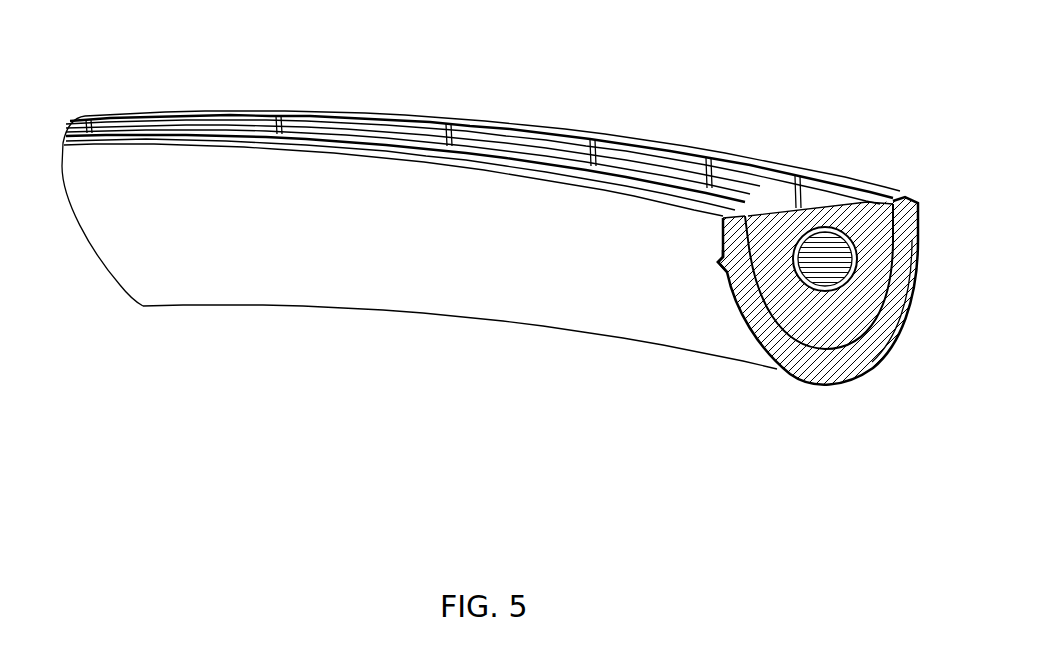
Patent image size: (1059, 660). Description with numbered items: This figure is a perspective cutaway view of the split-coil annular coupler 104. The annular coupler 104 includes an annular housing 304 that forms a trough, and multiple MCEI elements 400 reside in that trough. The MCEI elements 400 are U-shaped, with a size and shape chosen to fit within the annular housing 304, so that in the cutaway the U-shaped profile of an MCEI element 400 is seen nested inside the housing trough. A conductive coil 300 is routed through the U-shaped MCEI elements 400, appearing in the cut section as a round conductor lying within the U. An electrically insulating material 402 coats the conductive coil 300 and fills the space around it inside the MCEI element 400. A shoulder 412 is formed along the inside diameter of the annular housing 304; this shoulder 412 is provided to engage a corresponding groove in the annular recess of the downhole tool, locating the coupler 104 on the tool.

The split-coil annular coupler 104 is at (540, 46).
The conductive coil 300 is at (823, 244).
The annular housing 304 is at (870, 357).
The MCEI elements 400 is at (885, 278).
The electrically insulating material 402 is at (858, 240).
The shoulder 412 is at (710, 264).